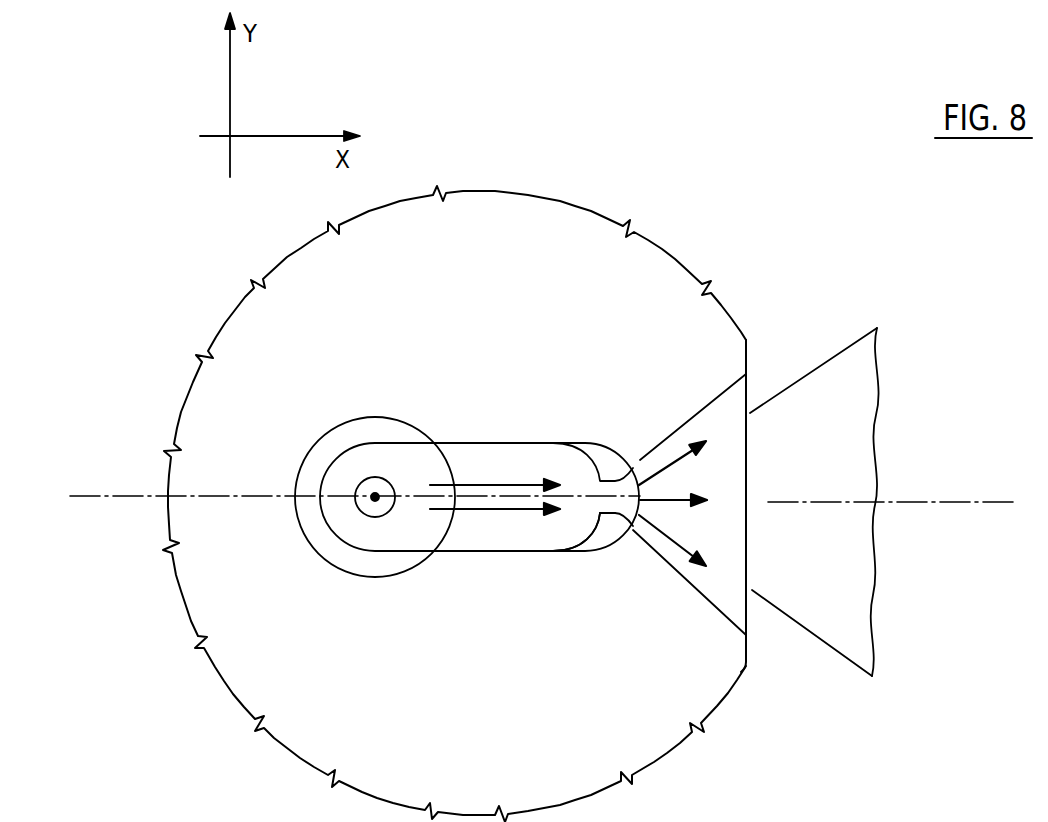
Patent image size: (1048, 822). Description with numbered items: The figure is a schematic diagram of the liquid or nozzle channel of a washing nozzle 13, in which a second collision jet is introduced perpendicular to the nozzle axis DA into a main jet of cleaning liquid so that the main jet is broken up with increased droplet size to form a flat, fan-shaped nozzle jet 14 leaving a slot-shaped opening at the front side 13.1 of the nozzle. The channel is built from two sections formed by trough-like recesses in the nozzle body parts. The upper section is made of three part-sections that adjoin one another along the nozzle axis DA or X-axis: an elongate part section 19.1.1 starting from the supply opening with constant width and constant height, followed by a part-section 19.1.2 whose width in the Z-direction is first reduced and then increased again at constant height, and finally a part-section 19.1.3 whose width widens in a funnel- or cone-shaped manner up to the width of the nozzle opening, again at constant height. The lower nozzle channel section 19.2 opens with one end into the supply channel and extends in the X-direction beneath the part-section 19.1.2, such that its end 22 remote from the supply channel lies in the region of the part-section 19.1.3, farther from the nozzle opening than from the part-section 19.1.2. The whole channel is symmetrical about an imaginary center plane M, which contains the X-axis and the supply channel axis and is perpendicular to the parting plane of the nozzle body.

The washing nozzle 13 is at (594, 171).
The front side of the nozzle 13.1 is at (787, 655).
The nozzle jet 14 is at (814, 498).
The elongate part section 19.1.1 is at (467, 486).
The part-section with reduced and re-increased width 19.1.2 is at (602, 500).
The funnel-shaped part-section forming the nozzle opening 19.1.3 is at (689, 509).
The nozzle channel section 19.2 is at (532, 578).
The end of the nozzle channel section 22 is at (623, 551).
The center plane M is at (354, 477).
The nozzle axis DA is at (891, 485).